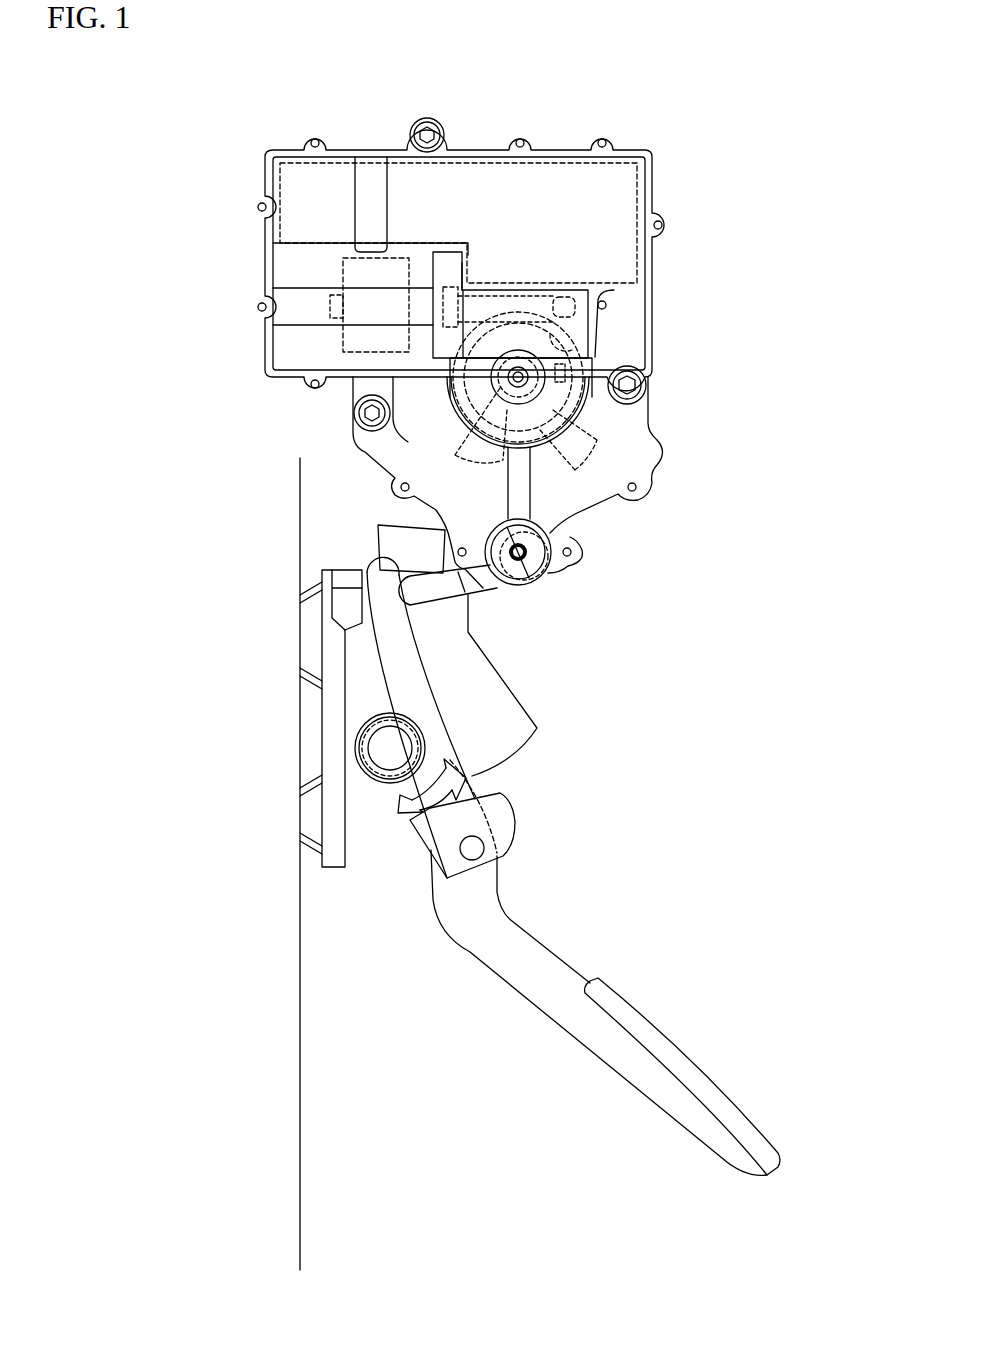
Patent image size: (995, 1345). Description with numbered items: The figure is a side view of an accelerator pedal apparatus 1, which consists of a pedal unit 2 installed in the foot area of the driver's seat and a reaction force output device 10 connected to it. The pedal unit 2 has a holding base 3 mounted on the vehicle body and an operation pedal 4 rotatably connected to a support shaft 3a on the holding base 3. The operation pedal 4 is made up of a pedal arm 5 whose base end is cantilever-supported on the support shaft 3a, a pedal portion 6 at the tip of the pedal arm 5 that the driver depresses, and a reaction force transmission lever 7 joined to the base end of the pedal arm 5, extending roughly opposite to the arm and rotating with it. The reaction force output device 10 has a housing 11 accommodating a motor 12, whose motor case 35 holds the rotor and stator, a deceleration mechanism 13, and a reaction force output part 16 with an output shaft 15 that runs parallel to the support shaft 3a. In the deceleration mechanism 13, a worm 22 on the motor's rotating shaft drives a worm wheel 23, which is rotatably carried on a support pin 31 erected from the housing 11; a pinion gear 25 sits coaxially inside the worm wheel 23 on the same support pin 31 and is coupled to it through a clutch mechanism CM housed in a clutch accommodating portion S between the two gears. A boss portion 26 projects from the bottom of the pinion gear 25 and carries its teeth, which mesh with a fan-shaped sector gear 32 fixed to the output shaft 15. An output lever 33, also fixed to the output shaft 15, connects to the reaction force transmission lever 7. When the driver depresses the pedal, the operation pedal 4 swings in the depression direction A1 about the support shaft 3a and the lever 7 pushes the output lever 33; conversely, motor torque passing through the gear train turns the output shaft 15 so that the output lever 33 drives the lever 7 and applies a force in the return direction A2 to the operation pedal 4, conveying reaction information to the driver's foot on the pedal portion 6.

The accelerator pedal apparatus 1 is at (155, 195).
The pedal unit 2 is at (328, 564).
The holding base 3 is at (332, 695).
The support shaft 3a is at (383, 750).
The operation pedal 4 is at (488, 993).
The pedal arm 5 is at (560, 1013).
The pedal portion 6 is at (667, 1035).
The reaction force transmission lever 7 is at (437, 718).
The reaction force output device 10 is at (278, 135).
The housing 11 is at (373, 147).
The motor 12 is at (342, 337).
The deceleration mechanism 13 is at (500, 388).
The output shaft 15 is at (553, 548).
The reaction force output part 16 is at (477, 596).
The worm 22 is at (522, 290).
The worm wheel 23 is at (583, 340).
The pinion gear 25 is at (580, 427).
The boss portion 26 is at (478, 430).
The support pin 31 is at (450, 420).
The sector gear 32 is at (570, 493).
The output lever 33 is at (450, 587).
The motor case 35 is at (340, 278).
The clutch mechanism CM is at (572, 345).
The clutch accommodating portion S is at (452, 378).
The depression direction A1 is at (412, 817).
The return direction A2 is at (450, 807).